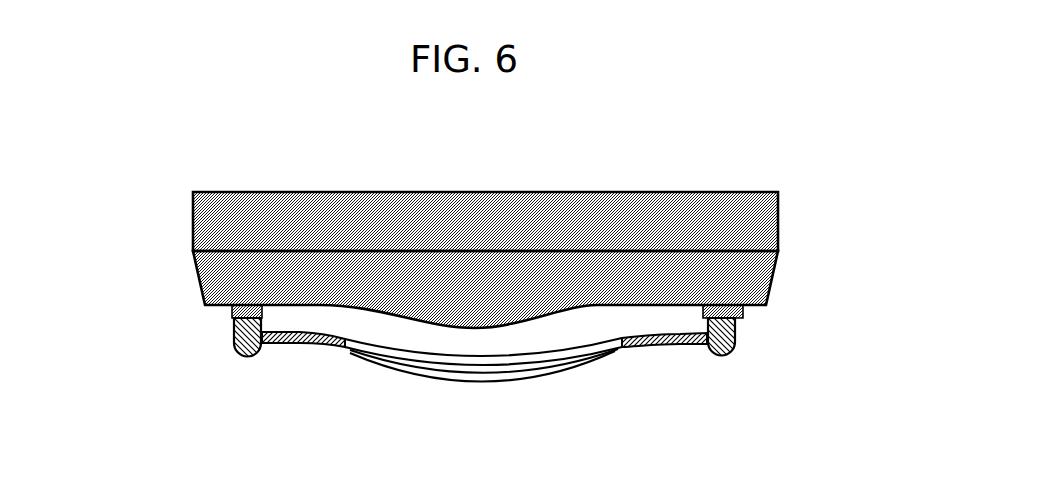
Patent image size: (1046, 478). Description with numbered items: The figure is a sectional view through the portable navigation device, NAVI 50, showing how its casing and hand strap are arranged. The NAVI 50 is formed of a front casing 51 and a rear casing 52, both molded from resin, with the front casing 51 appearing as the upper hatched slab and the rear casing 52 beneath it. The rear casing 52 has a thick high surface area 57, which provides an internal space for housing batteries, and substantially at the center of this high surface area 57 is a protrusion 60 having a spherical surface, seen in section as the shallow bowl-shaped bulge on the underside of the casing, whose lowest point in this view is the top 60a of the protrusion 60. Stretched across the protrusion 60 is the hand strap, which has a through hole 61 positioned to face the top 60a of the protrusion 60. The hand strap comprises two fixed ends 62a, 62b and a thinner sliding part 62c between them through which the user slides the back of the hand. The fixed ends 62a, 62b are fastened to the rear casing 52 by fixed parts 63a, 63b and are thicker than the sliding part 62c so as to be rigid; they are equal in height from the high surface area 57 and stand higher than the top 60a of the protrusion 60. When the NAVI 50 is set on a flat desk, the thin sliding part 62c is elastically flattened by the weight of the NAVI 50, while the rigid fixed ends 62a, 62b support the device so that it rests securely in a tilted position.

The NAVI 50 is at (476, 170).
The front casing 51 is at (558, 208).
The rear casing 52 is at (622, 268).
The high surface area 57 is at (320, 305).
The protrusion 60 is at (425, 321).
The top of protrusion 60a is at (467, 330).
The through hole 61 is at (504, 368).
The fixed end 62a is at (233, 342).
The fixed end 62b is at (733, 347).
The sliding part 62c is at (648, 345).
The fixed part 63a is at (232, 313).
The fixed part 63b is at (740, 316).